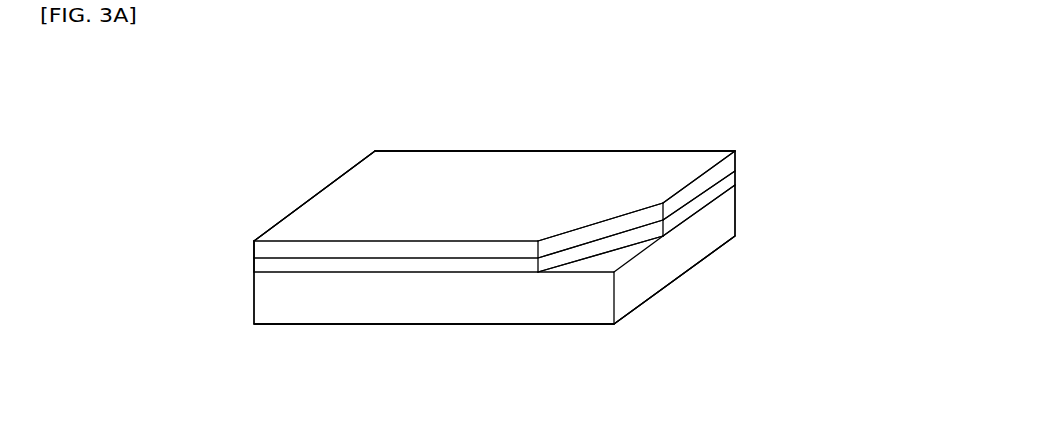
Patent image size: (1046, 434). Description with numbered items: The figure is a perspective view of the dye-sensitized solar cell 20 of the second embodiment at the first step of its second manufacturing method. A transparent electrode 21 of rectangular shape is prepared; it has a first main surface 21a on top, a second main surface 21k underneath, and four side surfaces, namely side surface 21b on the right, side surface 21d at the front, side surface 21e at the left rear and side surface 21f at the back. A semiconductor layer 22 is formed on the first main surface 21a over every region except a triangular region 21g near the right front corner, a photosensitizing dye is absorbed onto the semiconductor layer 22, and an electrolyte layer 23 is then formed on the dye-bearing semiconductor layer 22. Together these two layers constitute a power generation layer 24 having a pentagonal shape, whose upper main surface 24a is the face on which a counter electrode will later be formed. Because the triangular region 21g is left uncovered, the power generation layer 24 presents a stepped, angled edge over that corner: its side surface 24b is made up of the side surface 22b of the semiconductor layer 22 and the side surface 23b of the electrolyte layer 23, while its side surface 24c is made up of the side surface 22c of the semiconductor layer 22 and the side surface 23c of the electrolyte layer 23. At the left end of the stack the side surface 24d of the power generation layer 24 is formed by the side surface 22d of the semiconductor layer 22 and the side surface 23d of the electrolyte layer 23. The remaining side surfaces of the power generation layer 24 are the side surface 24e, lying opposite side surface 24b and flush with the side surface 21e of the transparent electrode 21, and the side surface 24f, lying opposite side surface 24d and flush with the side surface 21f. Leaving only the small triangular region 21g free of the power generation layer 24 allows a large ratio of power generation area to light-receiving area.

The dye-sensitized solar cell 20 is at (125, 81).
The transparent electrode 21 is at (736, 212).
The first main surface 21a is at (628, 253).
The side surface 21b is at (702, 237).
The side surface 21d is at (323, 303).
The side surface 21e is at (297, 210).
The side surface 21f is at (488, 151).
The triangular region 21g is at (602, 260).
The second main surface 21k is at (680, 275).
The semiconductor layer 22 is at (736, 178).
The side surface 22b is at (705, 195).
The side surface 22c is at (582, 253).
The side surface 22d is at (265, 265).
The electrolyte layer 23 is at (736, 158).
The side surface 23b is at (677, 205).
The side surface 23c is at (553, 245).
The side surface 23d is at (265, 252).
The power generation layer 24 is at (843, 103).
The main surface 24a is at (577, 170).
The side surface 24b is at (797, 43).
The side surface 24c is at (635, 377).
The side surface 24d is at (152, 227).
The side surface 24e is at (314, 189).
The side surface 24f is at (555, 103).